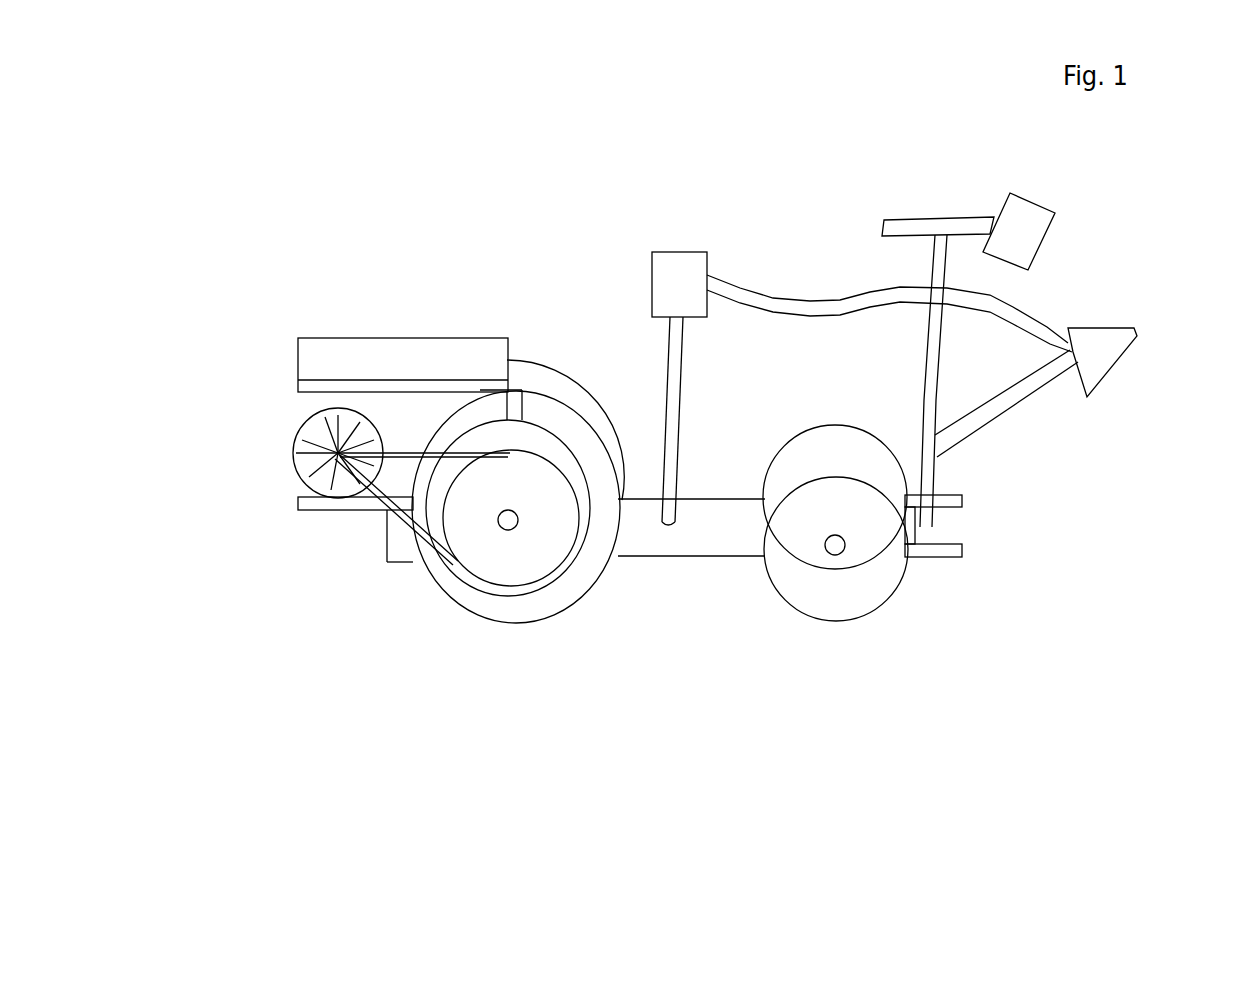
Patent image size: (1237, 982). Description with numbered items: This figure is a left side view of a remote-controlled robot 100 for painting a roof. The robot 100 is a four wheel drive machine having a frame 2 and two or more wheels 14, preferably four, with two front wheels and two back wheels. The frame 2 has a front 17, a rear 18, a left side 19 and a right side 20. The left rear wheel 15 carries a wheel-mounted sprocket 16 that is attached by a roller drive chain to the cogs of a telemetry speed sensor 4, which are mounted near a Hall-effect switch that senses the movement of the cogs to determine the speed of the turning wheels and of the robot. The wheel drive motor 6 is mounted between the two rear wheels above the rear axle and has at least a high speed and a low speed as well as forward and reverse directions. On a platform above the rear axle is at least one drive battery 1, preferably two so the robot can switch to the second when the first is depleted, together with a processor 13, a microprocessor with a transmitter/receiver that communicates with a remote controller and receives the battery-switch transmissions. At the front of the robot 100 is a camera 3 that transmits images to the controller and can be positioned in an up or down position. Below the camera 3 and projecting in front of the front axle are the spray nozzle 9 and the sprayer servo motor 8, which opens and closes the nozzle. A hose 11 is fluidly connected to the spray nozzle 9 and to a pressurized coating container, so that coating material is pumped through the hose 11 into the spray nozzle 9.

The robot 100 is at (381, 172).
The drive battery 1 is at (437, 357).
The processor 13 is at (397, 357).
The wheel drive motor 6 is at (307, 442).
The wheel-mounted sprocket 16 is at (312, 473).
The telemetry speed sensor 4 is at (333, 488).
The rear 18 is at (385, 563).
The left rear wheel 15 is at (513, 607).
The frame 2 is at (687, 543).
The right side 20 is at (710, 497).
The left side 19 is at (743, 555).
The wheels 14 is at (847, 455).
The front 17 is at (947, 553).
The hose 11 is at (780, 298).
The camera 3 is at (1042, 230).
The spray nozzle 9 is at (1130, 342).
The sprayer servo motor 8 is at (1087, 378).